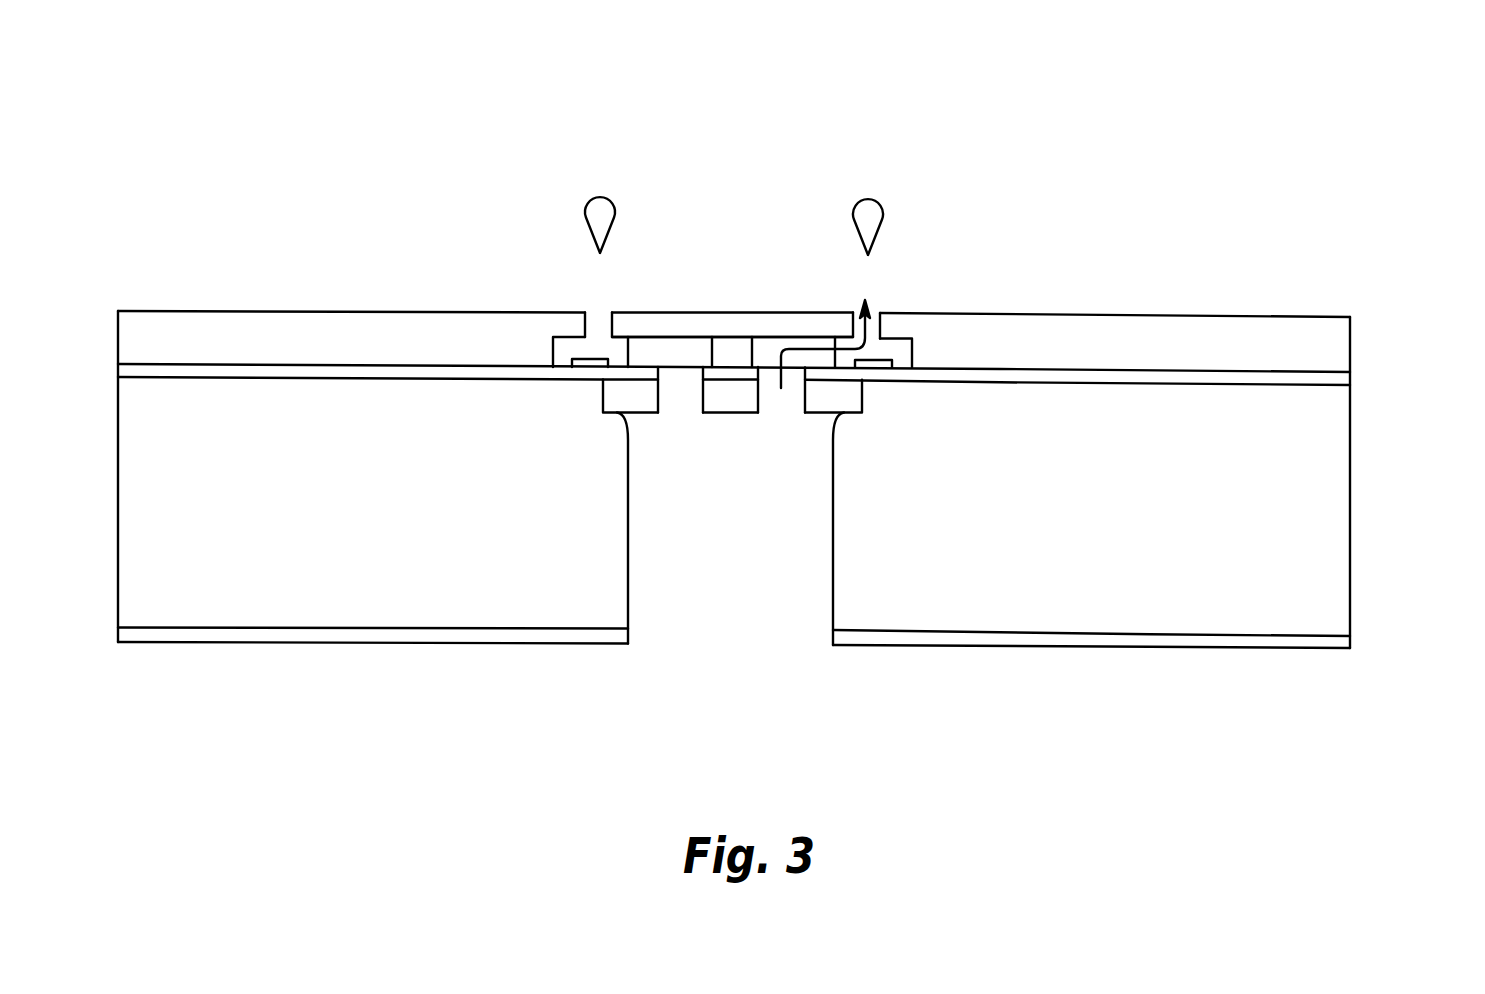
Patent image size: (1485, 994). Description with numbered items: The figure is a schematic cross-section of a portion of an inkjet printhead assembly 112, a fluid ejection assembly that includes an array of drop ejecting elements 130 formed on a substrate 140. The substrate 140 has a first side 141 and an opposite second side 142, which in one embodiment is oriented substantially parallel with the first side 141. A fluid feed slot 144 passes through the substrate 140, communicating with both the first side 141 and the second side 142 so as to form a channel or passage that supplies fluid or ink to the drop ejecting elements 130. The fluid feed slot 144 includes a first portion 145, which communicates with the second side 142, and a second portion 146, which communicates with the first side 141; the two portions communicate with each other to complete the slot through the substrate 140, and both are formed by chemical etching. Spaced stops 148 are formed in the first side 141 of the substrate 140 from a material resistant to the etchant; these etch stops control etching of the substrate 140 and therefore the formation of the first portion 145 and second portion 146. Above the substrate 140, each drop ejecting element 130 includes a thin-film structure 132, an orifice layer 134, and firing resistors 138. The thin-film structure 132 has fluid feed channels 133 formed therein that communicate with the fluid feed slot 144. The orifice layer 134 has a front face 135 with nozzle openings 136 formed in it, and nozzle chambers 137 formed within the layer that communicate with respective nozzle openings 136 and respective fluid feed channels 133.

The inkjet printhead assembly 112 is at (1355, 113).
The drop ejecting elements 130 is at (998, 213).
The thin-film structure 132 is at (1360, 371).
The fluid feed channels 133 is at (675, 372).
The orifice layer 134 is at (1360, 316).
The front face 135 is at (341, 312).
The nozzle openings 136 is at (597, 318).
The nozzle chambers 137 is at (572, 350).
The firing resistors 138 is at (592, 358).
The substrate 140 is at (1360, 389).
The first side 141 is at (228, 377).
The second side 142 is at (387, 628).
The fluid feed slot 144 is at (746, 577).
The first portion 145 is at (680, 605).
The second portion 146 is at (677, 398).
The stops 148 is at (615, 400).